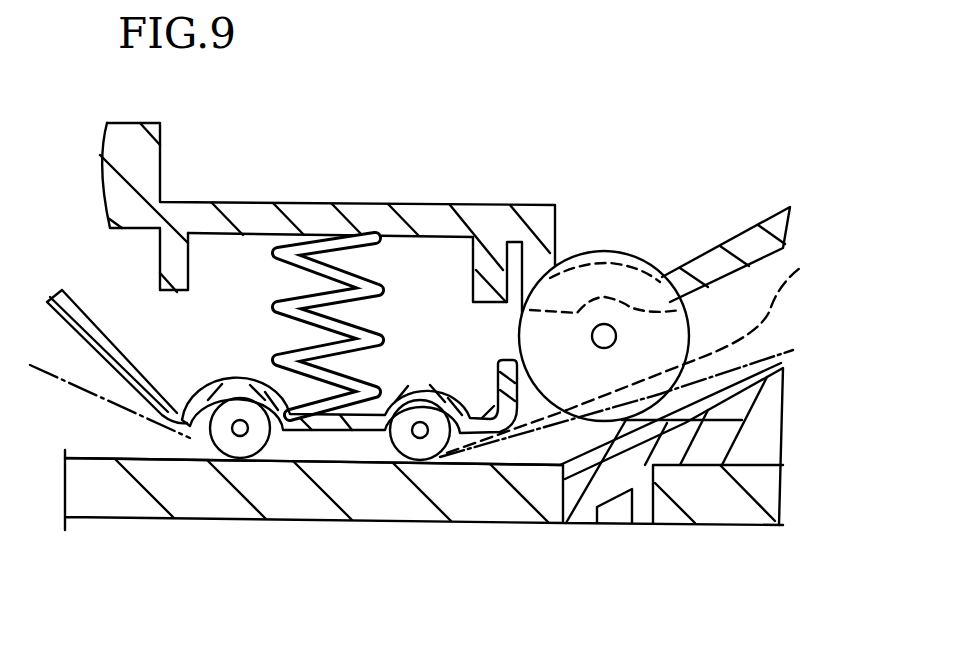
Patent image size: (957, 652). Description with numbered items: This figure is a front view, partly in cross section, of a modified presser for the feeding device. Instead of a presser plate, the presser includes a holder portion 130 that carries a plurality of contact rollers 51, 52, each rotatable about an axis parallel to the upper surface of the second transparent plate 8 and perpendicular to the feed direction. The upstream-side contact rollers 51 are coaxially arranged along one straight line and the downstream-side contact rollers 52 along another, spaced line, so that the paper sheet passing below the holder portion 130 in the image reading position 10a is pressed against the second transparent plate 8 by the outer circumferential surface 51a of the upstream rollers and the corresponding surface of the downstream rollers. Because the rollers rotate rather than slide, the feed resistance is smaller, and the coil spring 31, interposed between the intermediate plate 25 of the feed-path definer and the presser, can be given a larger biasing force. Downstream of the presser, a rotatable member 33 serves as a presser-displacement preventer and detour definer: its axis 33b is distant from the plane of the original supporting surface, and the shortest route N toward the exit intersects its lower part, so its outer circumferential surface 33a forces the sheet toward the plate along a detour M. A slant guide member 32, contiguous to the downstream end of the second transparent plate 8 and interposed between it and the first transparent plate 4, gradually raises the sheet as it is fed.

The first transparent plate 4 is at (752, 513).
The second transparent plate 8 is at (122, 493).
The image reading position 10a is at (335, 462).
The intermediate plate 25 is at (440, 223).
The coil spring 31 is at (300, 253).
The slant guide member 32 is at (697, 455).
The rotatable member 33 is at (597, 250).
The outer circumferential surface 33a is at (625, 420).
The axis 33b is at (607, 330).
The upstream-side contact rollers 51 is at (240, 404).
The outer circumferential surface 51a is at (240, 462).
The downstream-side contact rollers 52 is at (423, 405).
The holder portion 130 is at (187, 420).
The shortest route N is at (629, 358).
The detour M is at (795, 355).